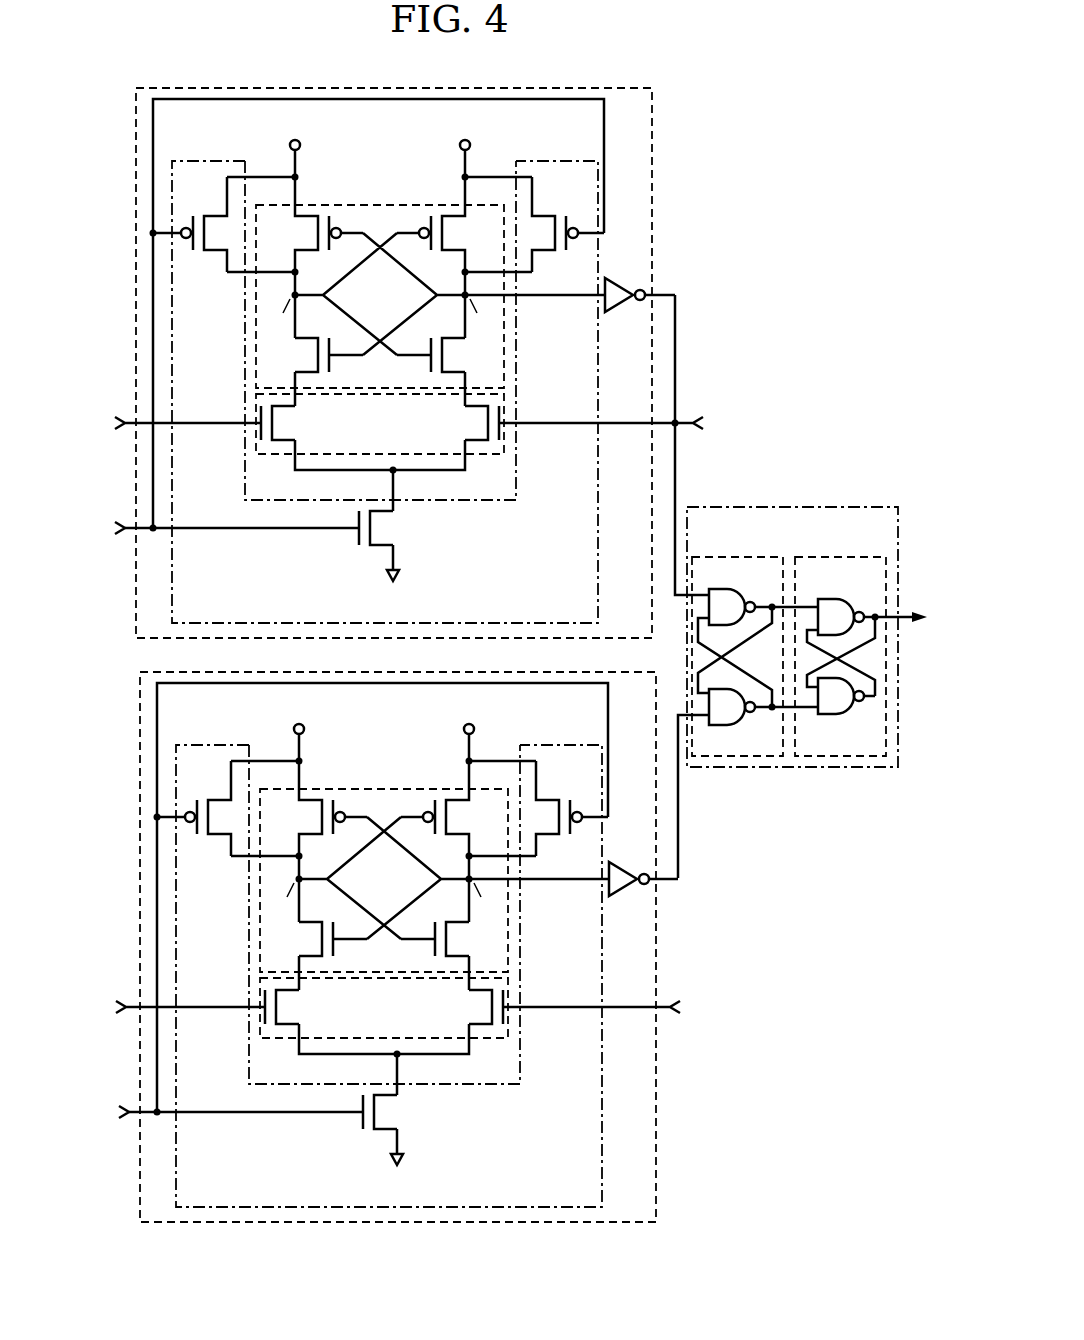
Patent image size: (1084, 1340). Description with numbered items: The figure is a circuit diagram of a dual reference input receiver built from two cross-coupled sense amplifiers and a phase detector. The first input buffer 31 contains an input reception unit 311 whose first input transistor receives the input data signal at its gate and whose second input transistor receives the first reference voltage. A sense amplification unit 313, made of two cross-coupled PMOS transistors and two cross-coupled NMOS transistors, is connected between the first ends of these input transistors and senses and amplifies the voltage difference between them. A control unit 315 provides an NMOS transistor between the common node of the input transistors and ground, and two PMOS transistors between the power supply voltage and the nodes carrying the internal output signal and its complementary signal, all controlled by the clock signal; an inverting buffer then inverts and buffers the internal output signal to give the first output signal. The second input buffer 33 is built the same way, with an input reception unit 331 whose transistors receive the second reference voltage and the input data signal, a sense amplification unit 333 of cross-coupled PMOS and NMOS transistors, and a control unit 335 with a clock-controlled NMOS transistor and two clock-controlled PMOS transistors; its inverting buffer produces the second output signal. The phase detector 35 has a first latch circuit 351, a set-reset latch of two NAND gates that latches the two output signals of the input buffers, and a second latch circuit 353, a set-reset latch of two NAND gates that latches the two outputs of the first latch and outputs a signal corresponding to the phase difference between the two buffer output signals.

The first input buffer 31 is at (135, 153).
The second input buffer 33 is at (393, 947).
The phase detector 35 is at (817, 507).
The input reception unit 311 is at (489, 456).
The sense amplification unit 313 is at (381, 205).
The control unit 315 is at (598, 567).
The input reception unit 331 is at (384, 914).
The sense amplification unit 333 is at (434, 862).
The control unit 335 is at (404, 976).
The first latch circuit 351 is at (753, 557).
The second latch circuit 353 is at (845, 557).